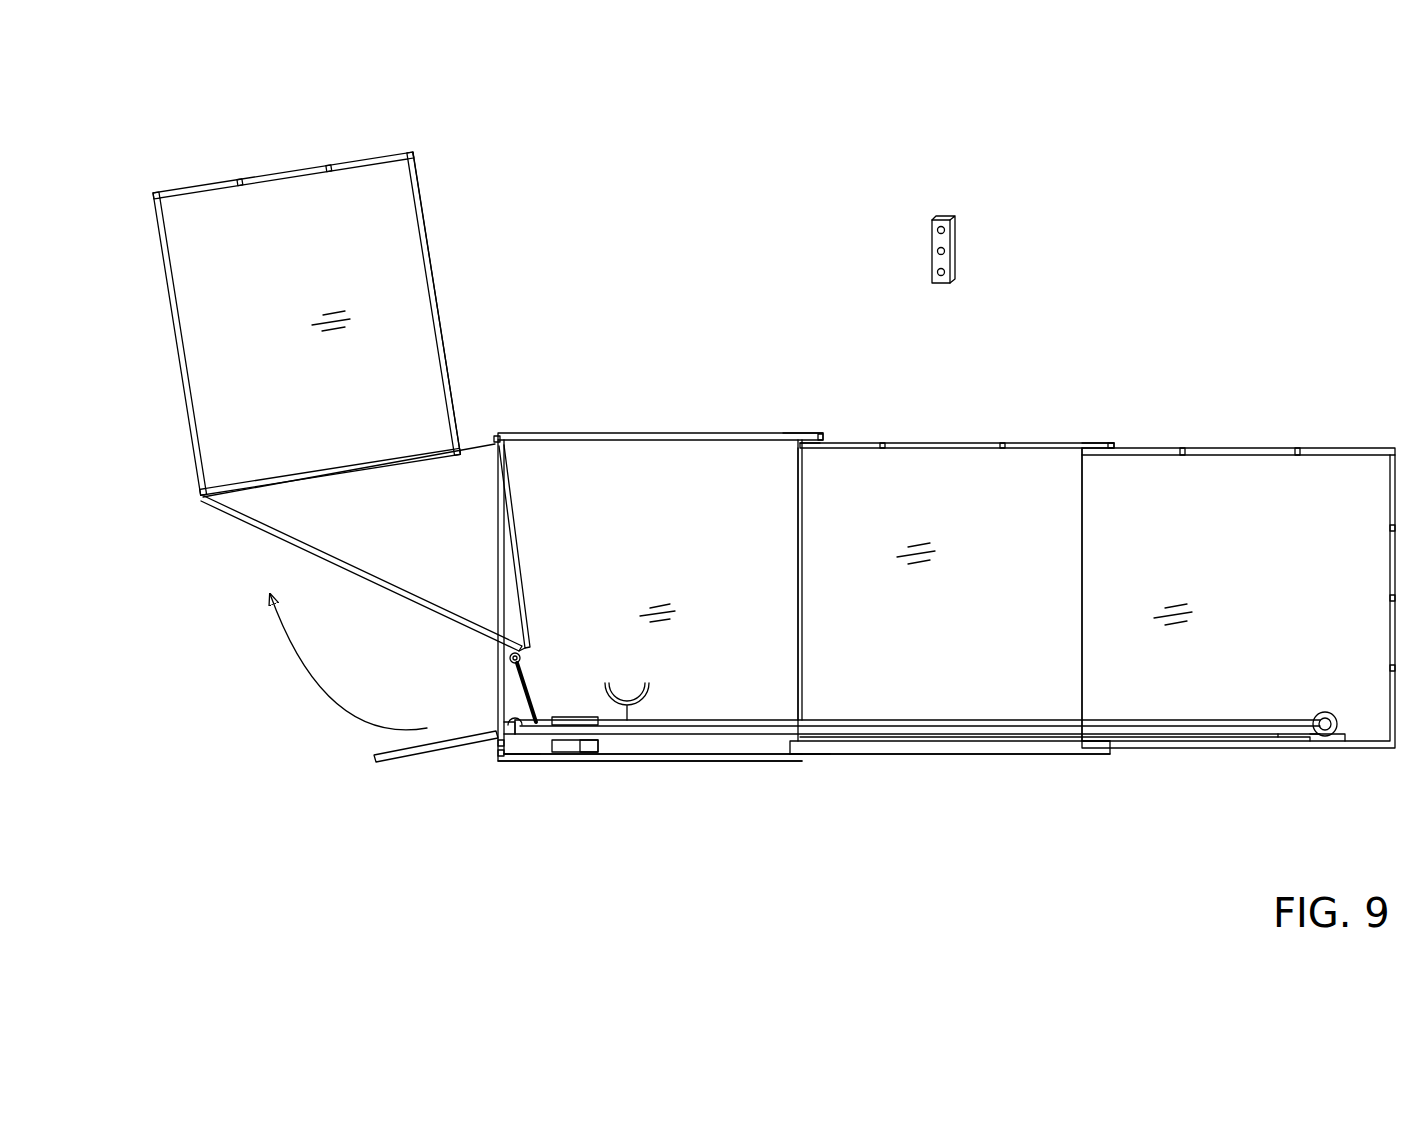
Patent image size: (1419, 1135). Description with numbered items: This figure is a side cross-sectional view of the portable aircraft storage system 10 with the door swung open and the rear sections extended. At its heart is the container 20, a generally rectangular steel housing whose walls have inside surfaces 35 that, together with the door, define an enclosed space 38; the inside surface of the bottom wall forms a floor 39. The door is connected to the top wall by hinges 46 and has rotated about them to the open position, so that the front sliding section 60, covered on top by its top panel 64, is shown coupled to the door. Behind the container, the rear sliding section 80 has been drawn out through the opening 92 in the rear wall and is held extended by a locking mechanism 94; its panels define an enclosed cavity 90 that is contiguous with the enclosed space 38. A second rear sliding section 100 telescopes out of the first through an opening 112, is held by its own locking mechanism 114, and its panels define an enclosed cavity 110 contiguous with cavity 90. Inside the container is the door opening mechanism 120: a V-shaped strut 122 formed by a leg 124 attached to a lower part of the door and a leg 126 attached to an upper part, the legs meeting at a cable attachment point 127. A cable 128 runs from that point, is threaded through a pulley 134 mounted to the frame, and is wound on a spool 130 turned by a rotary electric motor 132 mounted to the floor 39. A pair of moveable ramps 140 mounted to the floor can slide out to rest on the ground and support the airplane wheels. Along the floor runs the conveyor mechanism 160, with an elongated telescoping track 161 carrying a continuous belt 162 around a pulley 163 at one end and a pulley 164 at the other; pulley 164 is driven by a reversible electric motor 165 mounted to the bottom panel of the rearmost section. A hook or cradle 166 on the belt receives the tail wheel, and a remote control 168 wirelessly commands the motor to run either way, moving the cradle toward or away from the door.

The portable aircraft storage system 10 is at (1177, 213).
The container 20 is at (636, 430).
The inside surfaces 35 is at (750, 495).
The enclosed space 38 is at (668, 500).
The floor 39 is at (730, 747).
The hinges 46 is at (498, 440).
The front sliding section 60 is at (307, 163).
The top panel 64 is at (426, 213).
The rear sliding section 80 is at (963, 432).
The enclosed cavity 90 is at (960, 675).
The opening 92 is at (830, 756).
The locking mechanism 94 is at (783, 440).
The rear sliding section 100 is at (1252, 446).
The enclosed cavity 110 is at (1201, 522).
The opening 112 is at (1112, 749).
The locking mechanism 114 is at (1074, 446).
The door opening mechanism 120 is at (572, 797).
The V-shaped strut 122 is at (277, 535).
The leg 124 is at (332, 547).
The leg 126 is at (515, 562).
The cable attachment point 127 is at (530, 652).
The cable 128 is at (527, 705).
The spool 130 is at (518, 754).
The rotary electric motor 132 is at (605, 746).
The pulley 134 is at (510, 658).
The moveable ramps 140 is at (382, 752).
The conveyor mechanism 160 is at (1298, 767).
The elongated telescoping track 161 is at (990, 741).
The continuous belt 162 is at (1205, 720).
The pulley 163 is at (506, 724).
The pulley 164 is at (1338, 742).
The reversible electric motor 165 is at (1320, 713).
The cradle 166 is at (648, 704).
The remote control 168 is at (931, 250).